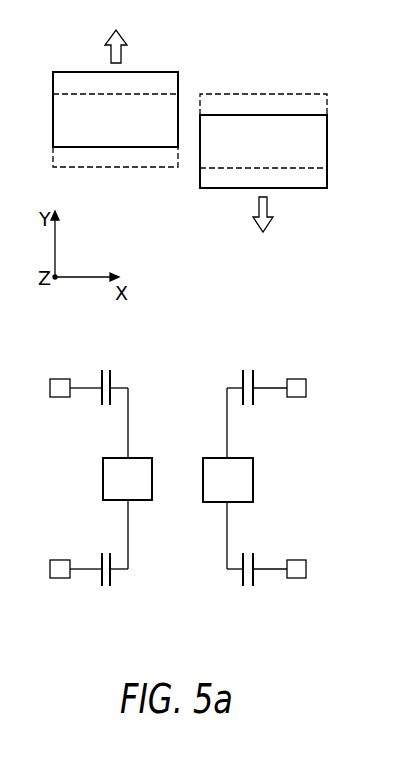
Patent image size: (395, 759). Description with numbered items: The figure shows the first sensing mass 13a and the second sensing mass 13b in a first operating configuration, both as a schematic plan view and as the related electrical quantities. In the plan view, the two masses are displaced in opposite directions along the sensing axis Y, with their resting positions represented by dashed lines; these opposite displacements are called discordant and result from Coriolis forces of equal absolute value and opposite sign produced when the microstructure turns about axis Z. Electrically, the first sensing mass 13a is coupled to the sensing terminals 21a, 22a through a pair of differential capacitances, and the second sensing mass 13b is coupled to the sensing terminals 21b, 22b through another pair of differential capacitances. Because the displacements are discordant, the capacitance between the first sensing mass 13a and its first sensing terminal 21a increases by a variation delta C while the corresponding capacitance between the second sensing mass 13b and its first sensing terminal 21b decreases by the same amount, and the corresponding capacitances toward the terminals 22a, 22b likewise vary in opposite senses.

The first sensing mass 13a is at (150, 72).
The second sensing mass 13b is at (233, 188).
The first sensing terminal 21a is at (58, 378).
The first sensing terminal 21b is at (296, 378).
The sensing terminal 22a is at (58, 580).
The sensing terminal 22b is at (297, 580).